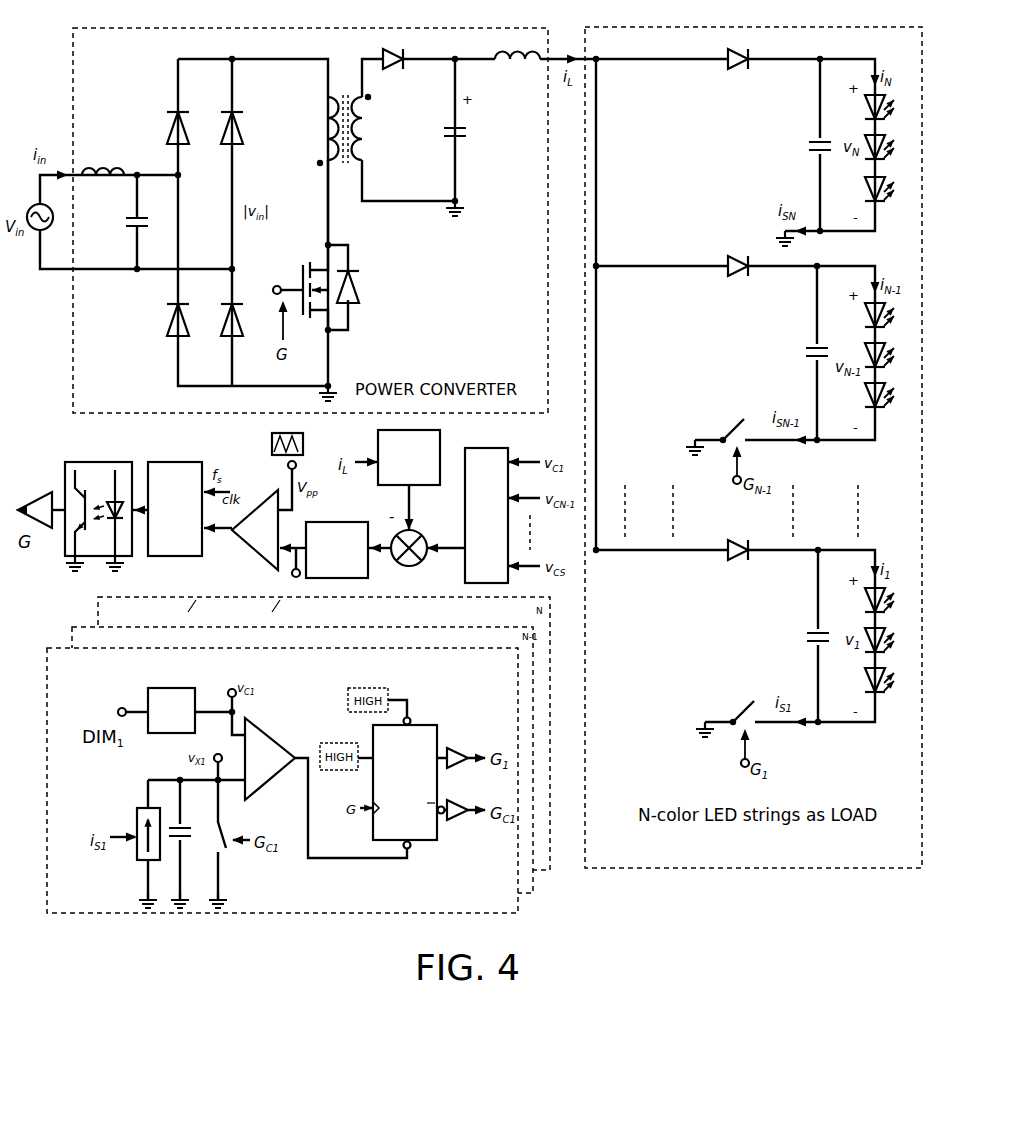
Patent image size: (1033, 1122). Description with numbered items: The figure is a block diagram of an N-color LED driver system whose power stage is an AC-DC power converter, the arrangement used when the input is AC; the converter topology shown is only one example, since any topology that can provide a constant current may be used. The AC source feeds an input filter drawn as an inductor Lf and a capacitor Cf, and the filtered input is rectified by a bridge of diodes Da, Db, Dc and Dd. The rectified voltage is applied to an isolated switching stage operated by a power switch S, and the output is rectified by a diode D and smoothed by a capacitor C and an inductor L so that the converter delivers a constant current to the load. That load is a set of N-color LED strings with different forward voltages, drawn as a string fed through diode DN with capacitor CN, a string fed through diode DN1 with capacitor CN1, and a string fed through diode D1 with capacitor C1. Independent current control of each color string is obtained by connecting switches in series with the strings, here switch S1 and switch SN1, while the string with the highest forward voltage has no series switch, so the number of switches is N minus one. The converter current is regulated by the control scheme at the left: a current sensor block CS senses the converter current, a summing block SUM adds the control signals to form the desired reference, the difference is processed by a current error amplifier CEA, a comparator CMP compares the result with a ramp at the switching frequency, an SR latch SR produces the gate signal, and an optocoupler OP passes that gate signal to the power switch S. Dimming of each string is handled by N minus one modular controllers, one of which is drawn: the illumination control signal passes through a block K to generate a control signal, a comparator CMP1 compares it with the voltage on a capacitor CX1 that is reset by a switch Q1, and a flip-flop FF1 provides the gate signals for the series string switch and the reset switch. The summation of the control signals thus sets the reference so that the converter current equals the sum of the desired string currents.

The input filter inductor Lf is at (103, 160).
The input filter capacitor Cf is at (124, 222).
The bridge rectifier diode Da is at (168, 135).
The bridge rectifier diode Db is at (168, 331).
The bridge rectifier diode Dc is at (223, 138).
The bridge rectifier diode Dd is at (223, 332).
The power switch S is at (316, 283).
The output diode D is at (393, 71).
The output capacitor C is at (449, 149).
The output inductor L is at (517, 70).
The string diode N DN is at (737, 76).
The string capacitor N CN is at (809, 155).
The string diode N-1 DN1 is at (736, 285).
The string capacitor N-1 CN1 is at (801, 337).
The switch SN1 is at (731, 415).
The string diode 1 D1 is at (741, 568).
The string capacitor 1 C1 is at (806, 639).
The switch S1 is at (743, 701).
The optocoupler OP is at (98, 496).
The SR latch SR is at (175, 509).
The comparator CMP is at (255, 530).
The current error amplifier CEA is at (337, 550).
The current sensor CS is at (409, 457).
The summing block SUM is at (486, 515).
The dimming gain block K is at (171, 710).
The dimming comparator CMP1 is at (270, 759).
The dimming capacitor CX1 is at (189, 840).
The dimming switch Q1 is at (230, 840).
The D flip-flop FF1 is at (408, 772).